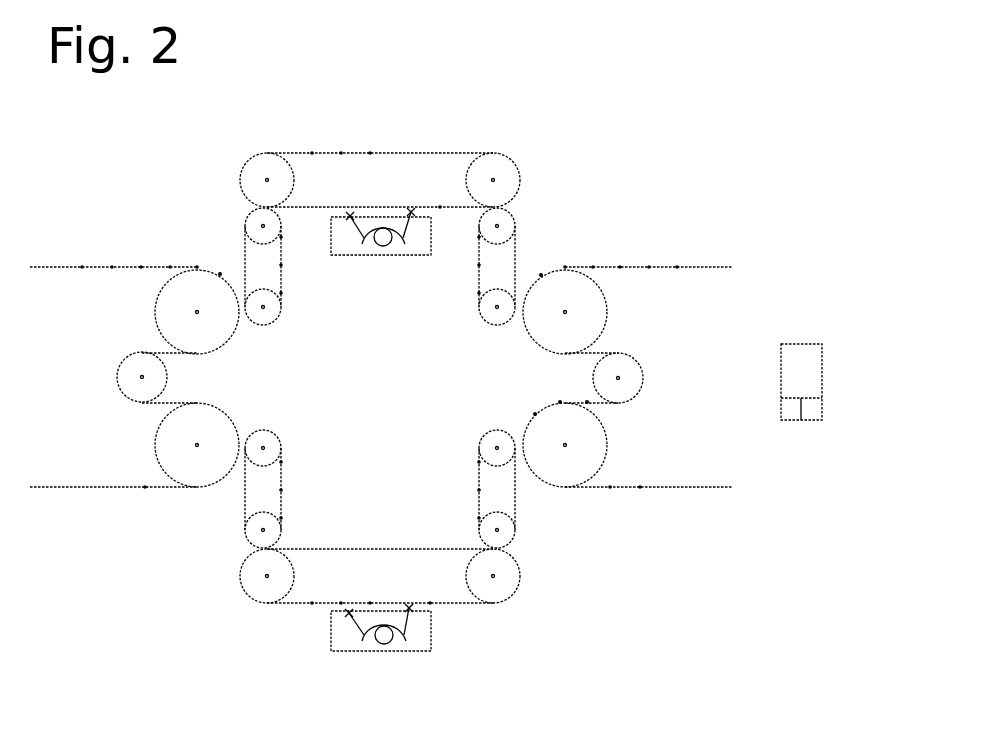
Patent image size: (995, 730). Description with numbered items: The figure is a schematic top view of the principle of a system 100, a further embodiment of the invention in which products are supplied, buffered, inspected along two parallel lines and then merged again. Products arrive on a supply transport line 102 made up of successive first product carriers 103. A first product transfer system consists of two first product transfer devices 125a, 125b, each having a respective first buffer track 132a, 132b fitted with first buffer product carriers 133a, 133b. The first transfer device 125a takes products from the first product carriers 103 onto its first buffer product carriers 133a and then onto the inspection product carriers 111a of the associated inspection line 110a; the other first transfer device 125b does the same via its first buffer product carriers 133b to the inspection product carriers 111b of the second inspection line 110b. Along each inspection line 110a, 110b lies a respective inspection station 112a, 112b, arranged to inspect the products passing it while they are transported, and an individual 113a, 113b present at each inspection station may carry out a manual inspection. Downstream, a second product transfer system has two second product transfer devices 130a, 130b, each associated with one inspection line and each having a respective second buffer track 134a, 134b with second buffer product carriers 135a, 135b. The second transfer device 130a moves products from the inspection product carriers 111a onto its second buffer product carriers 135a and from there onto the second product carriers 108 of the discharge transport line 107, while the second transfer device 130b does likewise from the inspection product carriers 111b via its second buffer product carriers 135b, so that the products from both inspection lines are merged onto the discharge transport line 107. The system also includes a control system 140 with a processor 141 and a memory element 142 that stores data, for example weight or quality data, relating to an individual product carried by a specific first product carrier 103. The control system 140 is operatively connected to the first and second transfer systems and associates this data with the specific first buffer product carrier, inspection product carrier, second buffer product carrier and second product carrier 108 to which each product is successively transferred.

The system 100 is at (768, 197).
The supply transport line 102 is at (107, 248).
The first product carriers 103 is at (113, 270).
The discharge transport line 107 is at (634, 258).
The second product carriers 108 is at (650, 268).
The inspection line 110a is at (423, 143).
The inspection line 110b is at (478, 610).
The inspection product carriers 111a is at (340, 153).
The inspection product carriers 111b is at (312, 603).
The inspection station 112a is at (338, 243).
The inspection station 112b is at (350, 645).
The individual 113a is at (402, 242).
The individual 113b is at (390, 642).
The first product transfer device 125a is at (208, 243).
The first product transfer device 125b is at (210, 505).
The second product transfer device 130a is at (537, 252).
The second product transfer device 130b is at (568, 500).
The first buffer track 132a is at (275, 330).
The first buffer track 132b is at (272, 425).
The first buffer product carriers 133a is at (283, 295).
The first buffer product carriers 133b is at (283, 490).
The second buffer track 134a is at (490, 330).
The second buffer track 134b is at (480, 432).
The second buffer product carriers 135a is at (478, 293).
The second buffer product carriers 135b is at (478, 490).
The control system 140 is at (806, 360).
The processor 141 is at (786, 408).
The memory element 142 is at (811, 415).